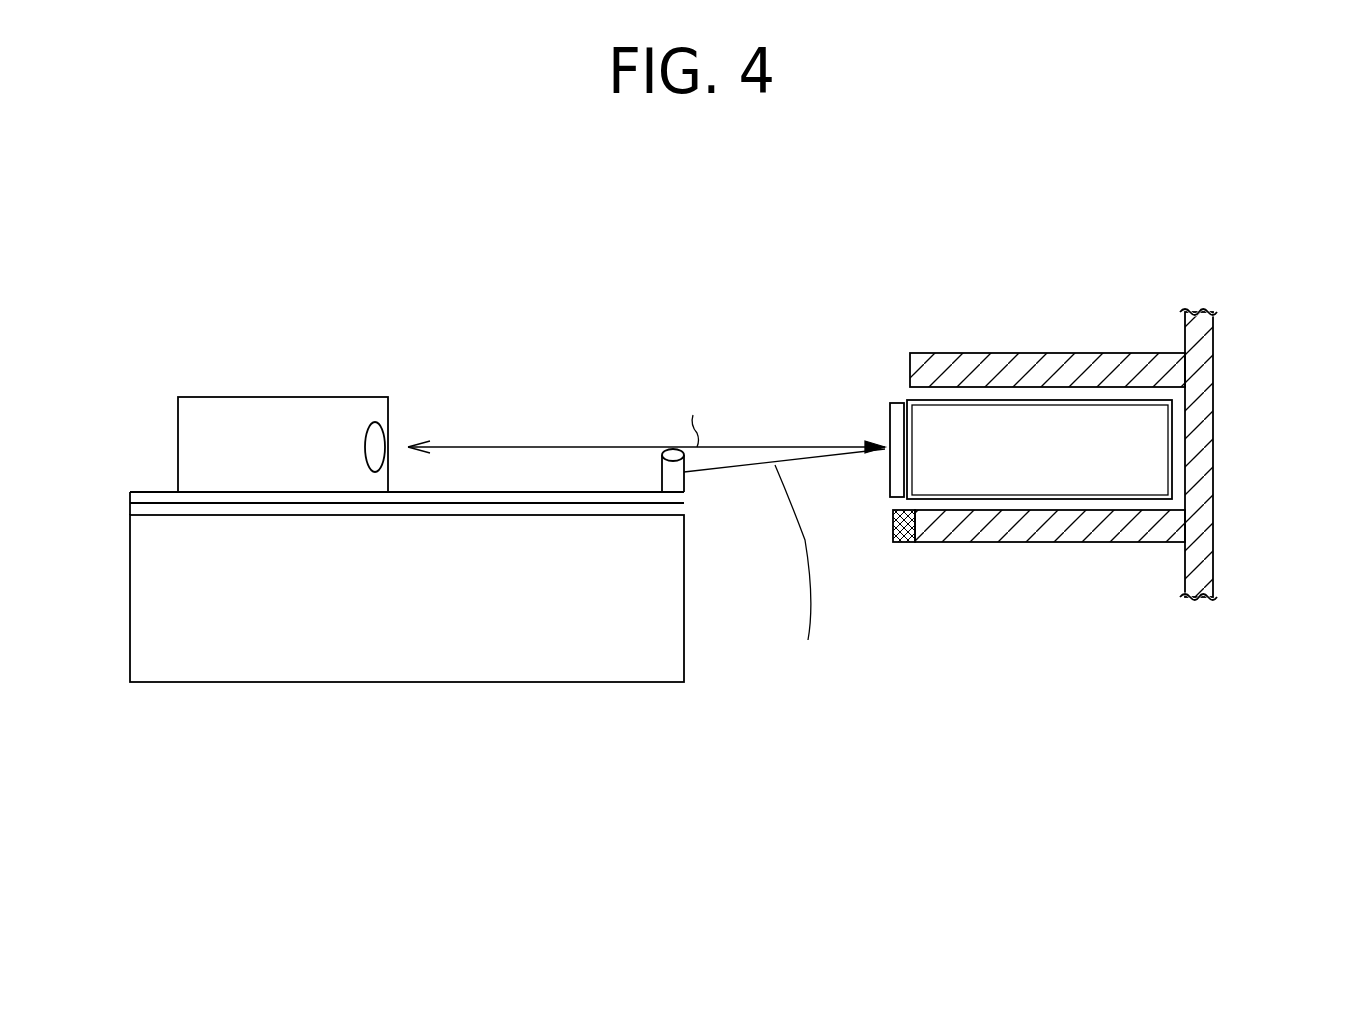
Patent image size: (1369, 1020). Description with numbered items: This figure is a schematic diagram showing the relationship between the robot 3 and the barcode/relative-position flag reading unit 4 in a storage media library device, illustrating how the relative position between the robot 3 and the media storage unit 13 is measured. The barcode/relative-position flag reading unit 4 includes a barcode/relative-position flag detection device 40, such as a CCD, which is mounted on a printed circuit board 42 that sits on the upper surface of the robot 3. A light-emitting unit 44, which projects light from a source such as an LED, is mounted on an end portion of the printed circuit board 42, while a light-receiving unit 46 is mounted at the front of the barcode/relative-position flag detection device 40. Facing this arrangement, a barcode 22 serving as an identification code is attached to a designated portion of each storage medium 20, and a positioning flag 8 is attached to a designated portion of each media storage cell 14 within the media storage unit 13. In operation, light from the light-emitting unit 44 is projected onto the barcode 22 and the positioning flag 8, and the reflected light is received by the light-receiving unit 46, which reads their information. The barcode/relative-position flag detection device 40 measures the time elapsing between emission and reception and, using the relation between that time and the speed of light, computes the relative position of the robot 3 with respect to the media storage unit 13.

The barcode/relative-position flag reading unit 4 is at (535, 352).
The robot 3 is at (262, 672).
The printed circuit board 42 is at (173, 497).
The barcode/relative-position flag detection device 40 is at (257, 403).
The light-receiving unit 46 is at (377, 438).
The light-emitting unit 44 is at (677, 478).
The barcode 22 is at (898, 422).
The storage medium 20 is at (928, 415).
The media storage cell 14 is at (1098, 527).
The positioning flag 8 is at (903, 545).
The media storage unit 13 is at (1224, 449).